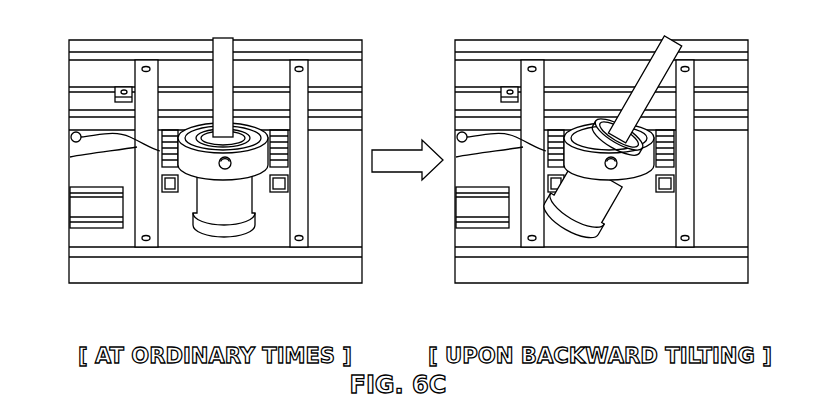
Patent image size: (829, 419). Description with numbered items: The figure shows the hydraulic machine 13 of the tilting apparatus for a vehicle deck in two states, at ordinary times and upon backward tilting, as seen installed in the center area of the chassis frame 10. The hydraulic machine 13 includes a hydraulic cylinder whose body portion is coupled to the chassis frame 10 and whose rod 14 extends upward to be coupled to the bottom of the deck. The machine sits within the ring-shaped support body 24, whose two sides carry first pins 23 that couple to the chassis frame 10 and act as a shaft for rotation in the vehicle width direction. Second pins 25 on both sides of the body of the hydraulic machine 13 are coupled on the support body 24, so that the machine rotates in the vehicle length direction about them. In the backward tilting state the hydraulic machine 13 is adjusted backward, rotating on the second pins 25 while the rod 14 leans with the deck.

The chassis frame 10 is at (288, 270).
The hydraulic machine 13 is at (264, 211).
The rod 14 is at (227, 100).
The first pins 23 is at (71, 135).
The support body 24 is at (262, 158).
The second pins 25 is at (220, 167).